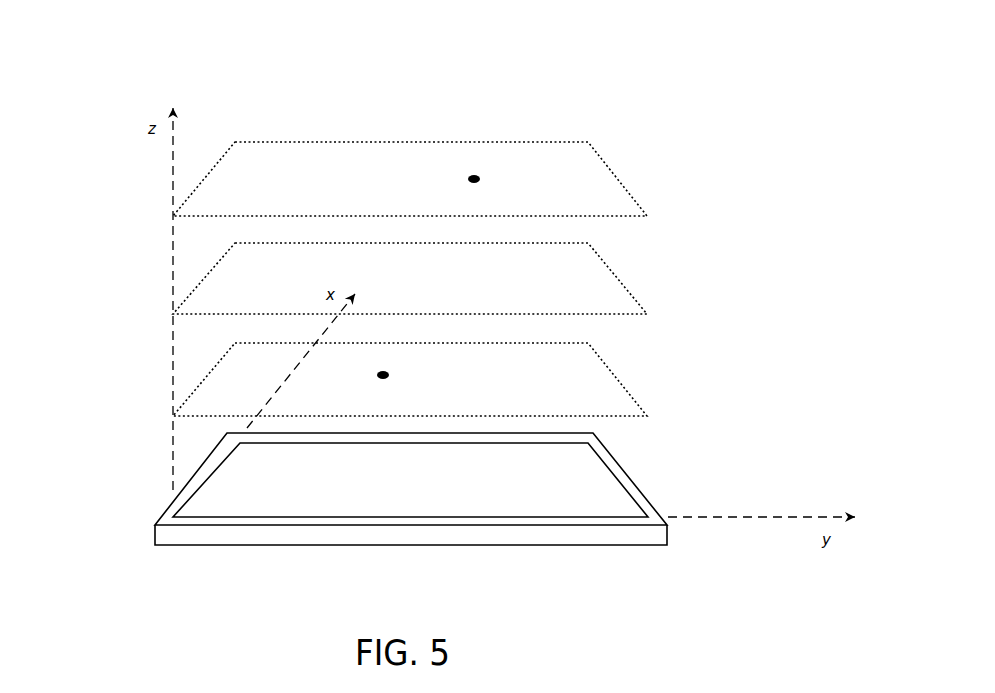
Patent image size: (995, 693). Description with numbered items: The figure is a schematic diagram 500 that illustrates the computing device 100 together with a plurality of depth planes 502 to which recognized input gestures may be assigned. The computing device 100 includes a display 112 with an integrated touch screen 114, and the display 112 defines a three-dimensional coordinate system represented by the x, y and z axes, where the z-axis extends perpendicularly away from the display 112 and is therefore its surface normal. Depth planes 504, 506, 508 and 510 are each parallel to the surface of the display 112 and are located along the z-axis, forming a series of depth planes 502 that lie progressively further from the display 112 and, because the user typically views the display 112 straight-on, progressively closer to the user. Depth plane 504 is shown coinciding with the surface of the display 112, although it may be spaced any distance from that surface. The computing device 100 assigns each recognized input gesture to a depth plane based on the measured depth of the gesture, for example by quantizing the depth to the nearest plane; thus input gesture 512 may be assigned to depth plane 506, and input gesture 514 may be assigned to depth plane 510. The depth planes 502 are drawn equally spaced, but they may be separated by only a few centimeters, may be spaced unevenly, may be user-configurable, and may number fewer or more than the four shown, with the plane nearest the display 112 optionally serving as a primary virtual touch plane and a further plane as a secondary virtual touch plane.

The diagram 500 is at (775, 82).
The depth planes 502 is at (217, 86).
The depth plane 504 is at (393, 476).
The depth plane 506 is at (203, 375).
The depth plane 508 is at (203, 275).
The depth plane 510 is at (203, 175).
The input gesture 512 is at (383, 371).
The input gesture 514 is at (474, 175).
The computing device 100 is at (393, 506).
The display 112 is at (456, 472).
The touch screen 114 is at (622, 476).